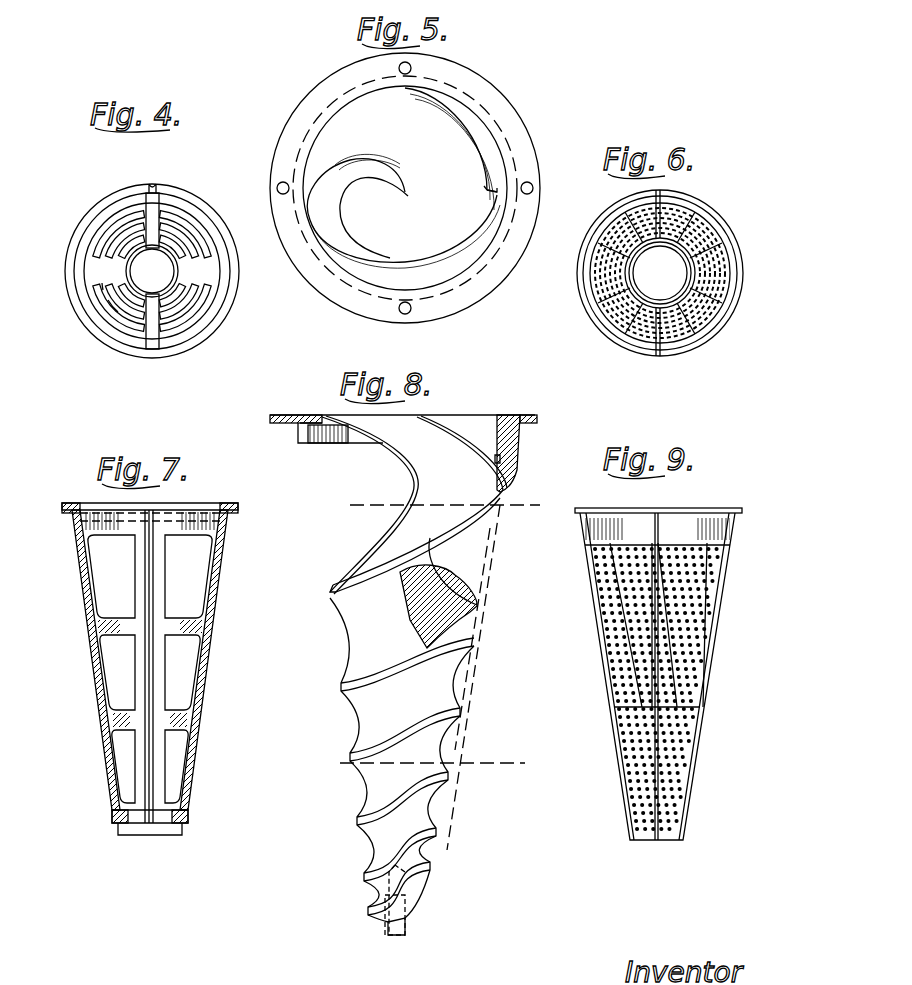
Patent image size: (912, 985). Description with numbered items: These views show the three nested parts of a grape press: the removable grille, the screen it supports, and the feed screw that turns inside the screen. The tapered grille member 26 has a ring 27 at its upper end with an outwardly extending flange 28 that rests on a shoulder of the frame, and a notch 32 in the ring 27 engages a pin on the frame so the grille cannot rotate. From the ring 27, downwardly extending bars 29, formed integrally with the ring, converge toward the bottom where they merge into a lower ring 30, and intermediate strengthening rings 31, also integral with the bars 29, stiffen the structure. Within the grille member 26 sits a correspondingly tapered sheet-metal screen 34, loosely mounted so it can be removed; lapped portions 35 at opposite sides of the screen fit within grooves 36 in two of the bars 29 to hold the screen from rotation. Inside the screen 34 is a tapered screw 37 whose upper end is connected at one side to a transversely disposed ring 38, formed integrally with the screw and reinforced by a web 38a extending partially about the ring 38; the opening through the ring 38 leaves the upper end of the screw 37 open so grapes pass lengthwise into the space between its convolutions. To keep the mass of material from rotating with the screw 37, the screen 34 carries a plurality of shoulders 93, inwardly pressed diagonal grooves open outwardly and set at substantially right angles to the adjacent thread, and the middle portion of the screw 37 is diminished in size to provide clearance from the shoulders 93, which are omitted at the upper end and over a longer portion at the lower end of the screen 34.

In FIG. 4, the grille member 26 is at (178, 366).
In FIG. 4, the ring 27 is at (180, 337).
In FIG. 7, the ring 27 is at (193, 537).
In FIG. 4, the flange 28 is at (228, 317).
In FIG. 7, the flange 28 is at (65, 517).
In FIG. 4, the bars 29 is at (165, 208).
In FIG. 7, the bars 29 is at (138, 675).
In FIG. 4, the ring 30 is at (123, 303).
In FIG. 7, the ring 30 is at (117, 820).
In FIG. 4, the strengthening rings 31 is at (115, 300).
In FIG. 7, the strengthening rings 31 is at (190, 620).
In FIG. 4, the notch 32 is at (152, 186).
In FIG. 6, the screen 34 is at (653, 337).
In FIG. 9, the screen 34 is at (608, 690).
In FIG. 6, the lapped portions 35 is at (685, 202).
In FIG. 9, the lapped portions 35 is at (662, 520).
In FIG. 4, the grooves 36 is at (147, 212).
In FIG. 7, the grooves 36 is at (147, 555).
In FIG. 5, the screw 37 is at (380, 255).
In FIG. 8, the screw 37 is at (364, 558).
In FIG. 5, the ring 38 is at (382, 295).
In FIG. 8, the ring 38 is at (325, 443).
In FIG. 5, the web 38a is at (487, 187).
In FIG. 8, the web 38a is at (505, 448).
In FIG. 6, the shoulders 93 is at (693, 317).
In FIG. 9, the shoulders 93 is at (700, 623).